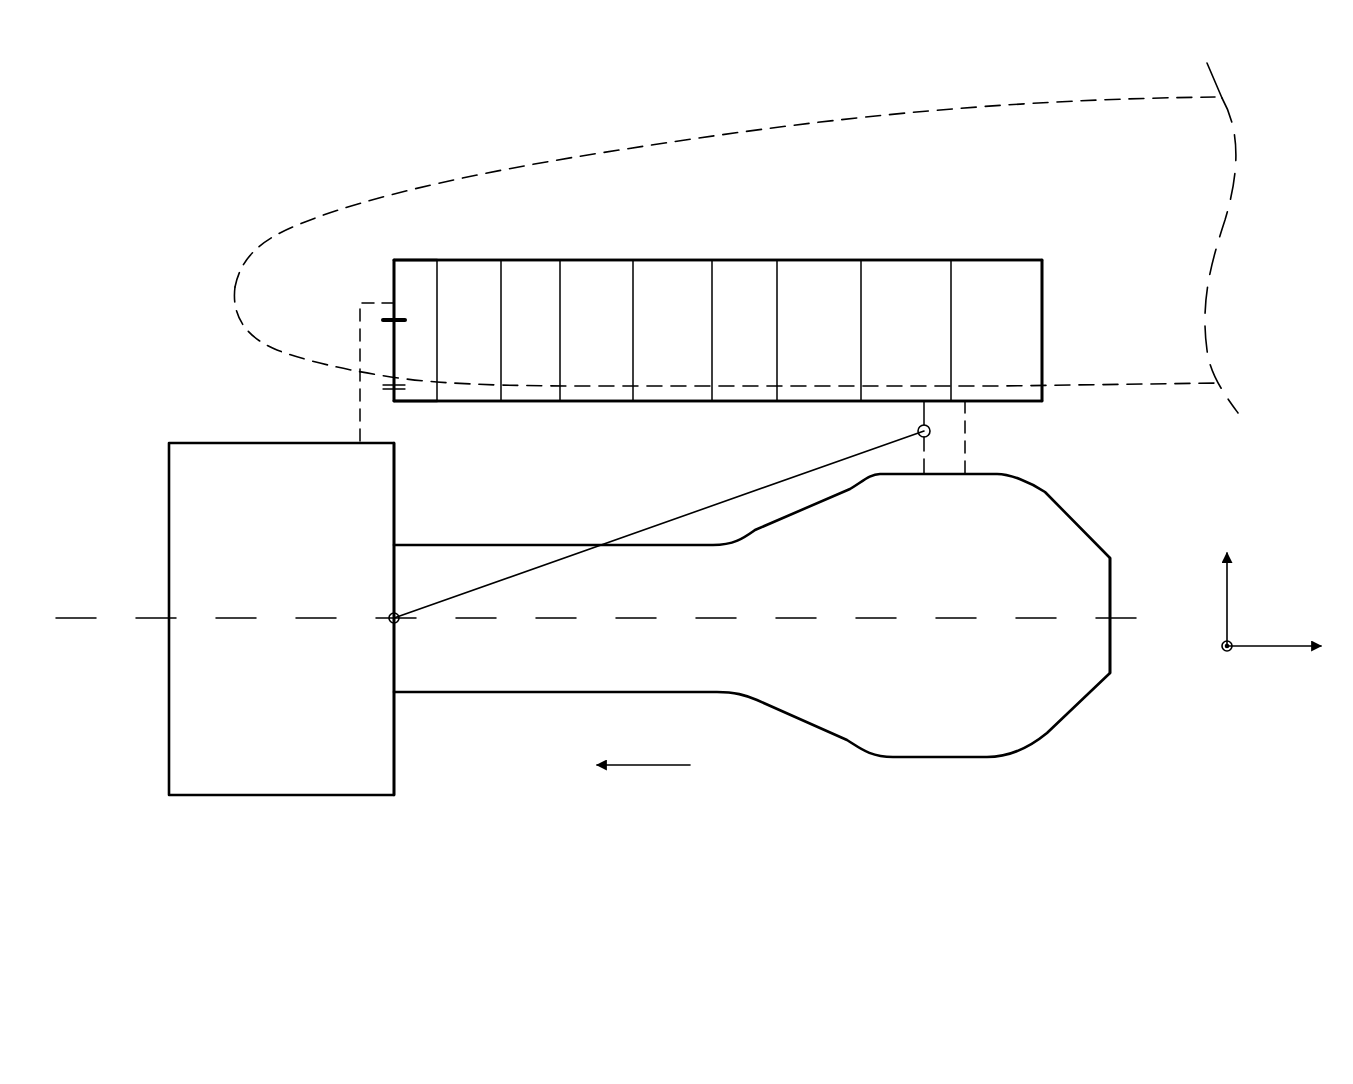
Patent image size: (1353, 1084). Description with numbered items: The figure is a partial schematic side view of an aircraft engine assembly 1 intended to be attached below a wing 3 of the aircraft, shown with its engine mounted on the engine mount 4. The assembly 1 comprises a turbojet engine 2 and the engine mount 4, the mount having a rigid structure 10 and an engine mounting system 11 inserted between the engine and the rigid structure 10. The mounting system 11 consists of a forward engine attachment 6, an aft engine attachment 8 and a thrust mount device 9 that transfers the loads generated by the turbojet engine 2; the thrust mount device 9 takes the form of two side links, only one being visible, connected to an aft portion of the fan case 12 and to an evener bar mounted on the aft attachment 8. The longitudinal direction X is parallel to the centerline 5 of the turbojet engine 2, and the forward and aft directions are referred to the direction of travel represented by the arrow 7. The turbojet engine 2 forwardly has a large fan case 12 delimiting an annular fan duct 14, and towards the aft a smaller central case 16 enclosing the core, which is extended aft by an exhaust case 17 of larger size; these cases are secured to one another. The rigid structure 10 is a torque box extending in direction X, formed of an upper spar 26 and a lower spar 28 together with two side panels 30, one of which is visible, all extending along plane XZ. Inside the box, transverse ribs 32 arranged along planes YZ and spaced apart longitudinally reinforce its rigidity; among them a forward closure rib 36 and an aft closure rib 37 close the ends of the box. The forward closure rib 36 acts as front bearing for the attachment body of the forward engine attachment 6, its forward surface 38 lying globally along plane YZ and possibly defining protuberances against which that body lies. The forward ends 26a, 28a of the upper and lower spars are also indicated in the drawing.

The aircraft engine assembly 1 is at (233, 216).
The turbojet engine 2 is at (230, 818).
The wing 3 is at (817, 115).
The engine mount 4 is at (745, 233).
The centerline 5 is at (79, 621).
The forward engine attachment 6 is at (399, 430).
The arrow 7 is at (640, 765).
The aft engine attachment 8 is at (922, 417).
The thrust mount device 9 is at (619, 537).
The rigid structure 10 is at (541, 256).
The engine mounting system 11 is at (669, 457).
The fan case 12 is at (367, 796).
The annular fan duct 14 is at (352, 504).
The central case 16 is at (523, 693).
The exhaust case 17 is at (948, 757).
The upper spar 26 is at (933, 258).
The front end of upper spar 26a is at (395, 270).
The lower spar 28 is at (742, 401).
The front end of lower spar 28a is at (396, 402).
The side panel 30 is at (810, 268).
The transverse ribs 32 is at (863, 298).
The forward closure rib 36 is at (399, 287).
The aft closure rib 37 is at (1048, 300).
The forward surface 38 is at (390, 283).